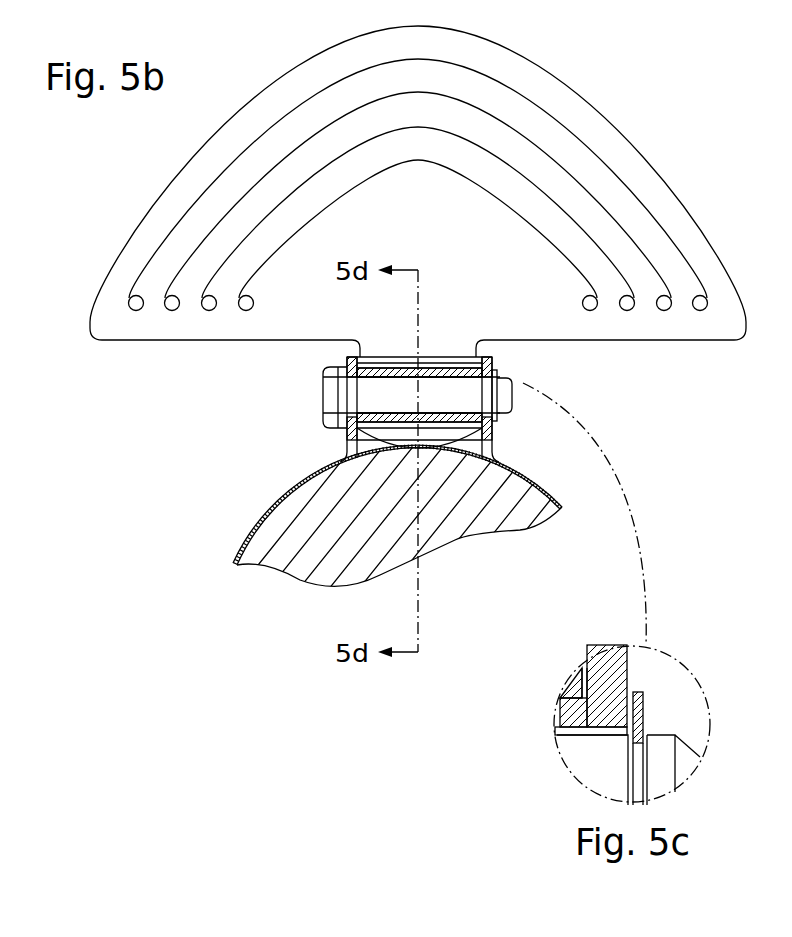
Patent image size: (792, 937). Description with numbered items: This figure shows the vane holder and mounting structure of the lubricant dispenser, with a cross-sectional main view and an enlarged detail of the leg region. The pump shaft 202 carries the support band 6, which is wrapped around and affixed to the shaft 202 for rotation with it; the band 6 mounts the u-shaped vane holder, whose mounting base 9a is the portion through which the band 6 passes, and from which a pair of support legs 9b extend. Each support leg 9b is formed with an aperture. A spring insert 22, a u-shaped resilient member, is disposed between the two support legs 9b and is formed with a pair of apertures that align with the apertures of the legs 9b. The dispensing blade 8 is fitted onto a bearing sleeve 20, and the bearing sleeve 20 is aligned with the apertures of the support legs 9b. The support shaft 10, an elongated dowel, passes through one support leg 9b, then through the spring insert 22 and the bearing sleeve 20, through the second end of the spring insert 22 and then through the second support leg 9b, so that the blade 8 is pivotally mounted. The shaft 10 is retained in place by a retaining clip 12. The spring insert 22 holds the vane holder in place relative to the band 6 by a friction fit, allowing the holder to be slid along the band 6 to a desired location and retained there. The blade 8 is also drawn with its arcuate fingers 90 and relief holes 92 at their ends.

In FIG. 5B, the dispensing blade 8 is at (640, 139).
In FIG. 5C, the dispensing blade 8 is at (570, 687).
In FIG. 5B, the arcuate fingers 90 is at (528, 94).
In FIG. 5B, the relief holes 92 is at (118, 300).
In FIG. 5B, the support legs 9b is at (347, 358).
In FIG. 5C, the support legs 9b is at (618, 668).
In FIG. 5B, the bearing sleeve 20 is at (447, 372).
In FIG. 5C, the bearing sleeve 20 is at (566, 713).
In FIG. 5B, the support shaft 10 is at (358, 403).
In FIG. 5C, the support shaft 10 is at (585, 765).
In FIG. 5B, the retaining clip 12 is at (495, 420).
In FIG. 5C, the retaining clip 12 is at (648, 715).
In FIG. 5B, the spring insert 22 is at (497, 447).
In FIG. 5B, the support band 6 is at (270, 489).
In FIG. 5B, the mounting base 9a is at (438, 447).
In FIG. 5B, the pump shaft 202 is at (312, 553).